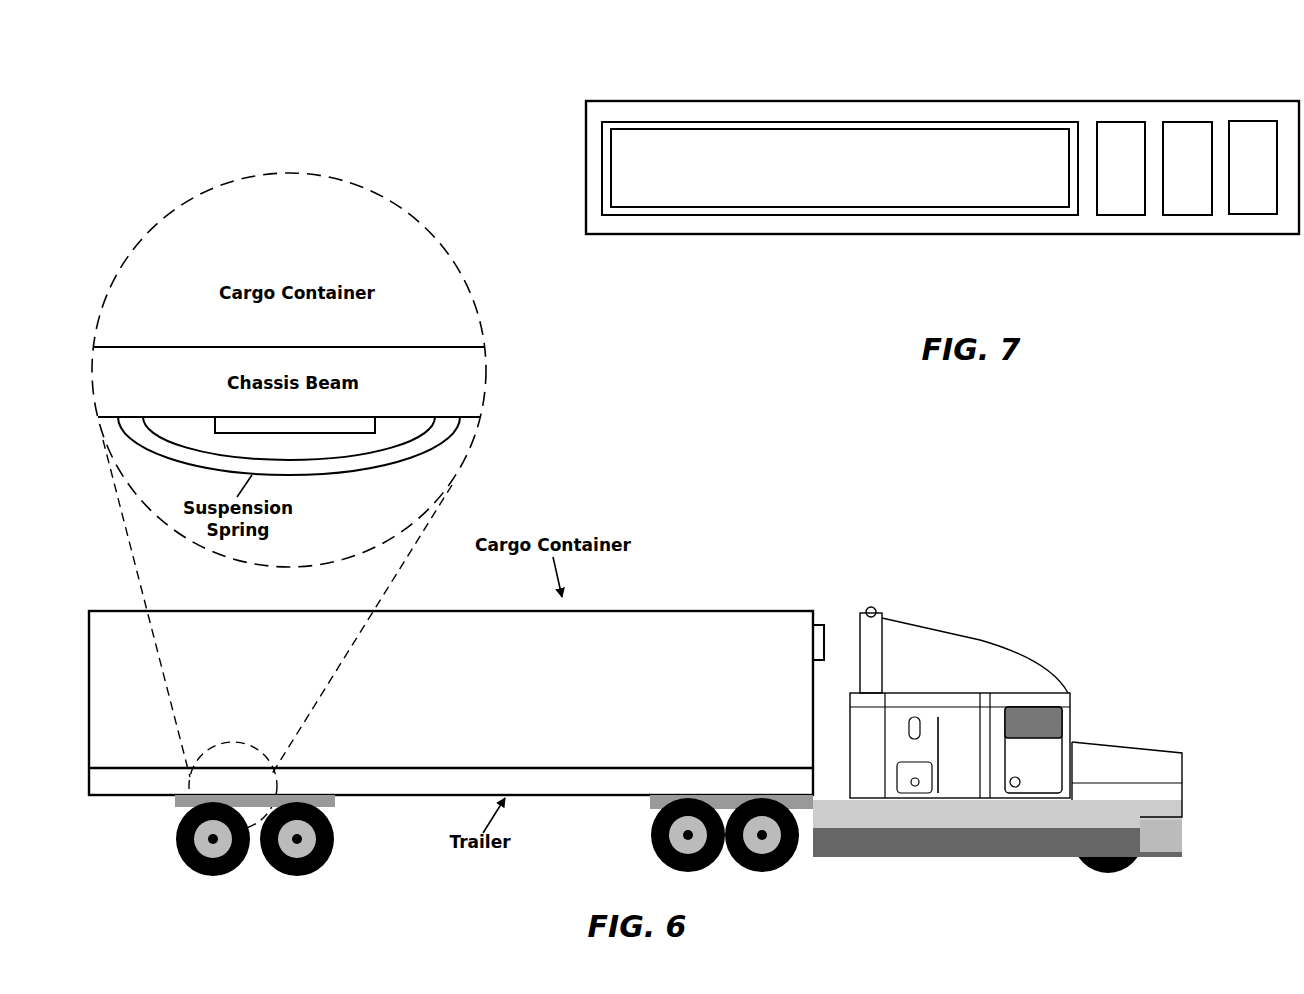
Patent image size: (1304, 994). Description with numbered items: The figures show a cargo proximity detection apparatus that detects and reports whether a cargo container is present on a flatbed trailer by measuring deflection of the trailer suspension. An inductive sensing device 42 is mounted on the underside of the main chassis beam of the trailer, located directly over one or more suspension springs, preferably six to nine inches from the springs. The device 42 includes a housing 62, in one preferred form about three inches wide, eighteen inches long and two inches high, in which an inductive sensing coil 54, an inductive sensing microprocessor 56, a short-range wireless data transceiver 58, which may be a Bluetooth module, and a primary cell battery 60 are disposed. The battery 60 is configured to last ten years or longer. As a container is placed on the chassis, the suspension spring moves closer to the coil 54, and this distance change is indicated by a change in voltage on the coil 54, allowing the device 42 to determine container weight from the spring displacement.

In FIG. 7, the inductive sensing device 42 is at (953, 93).
In FIG. 6, the inductive sensing device 42 is at (308, 427).
In FIG. 7, the inductive sensing coil 54 is at (693, 215).
In FIG. 7, the inductive sensing microprocessor 56 is at (1110, 215).
In FIG. 7, the short-range wireless data transceiver 58 is at (1187, 215).
In FIG. 7, the primary cell battery 60 is at (1262, 215).
In FIG. 7, the housing 62 is at (1077, 100).